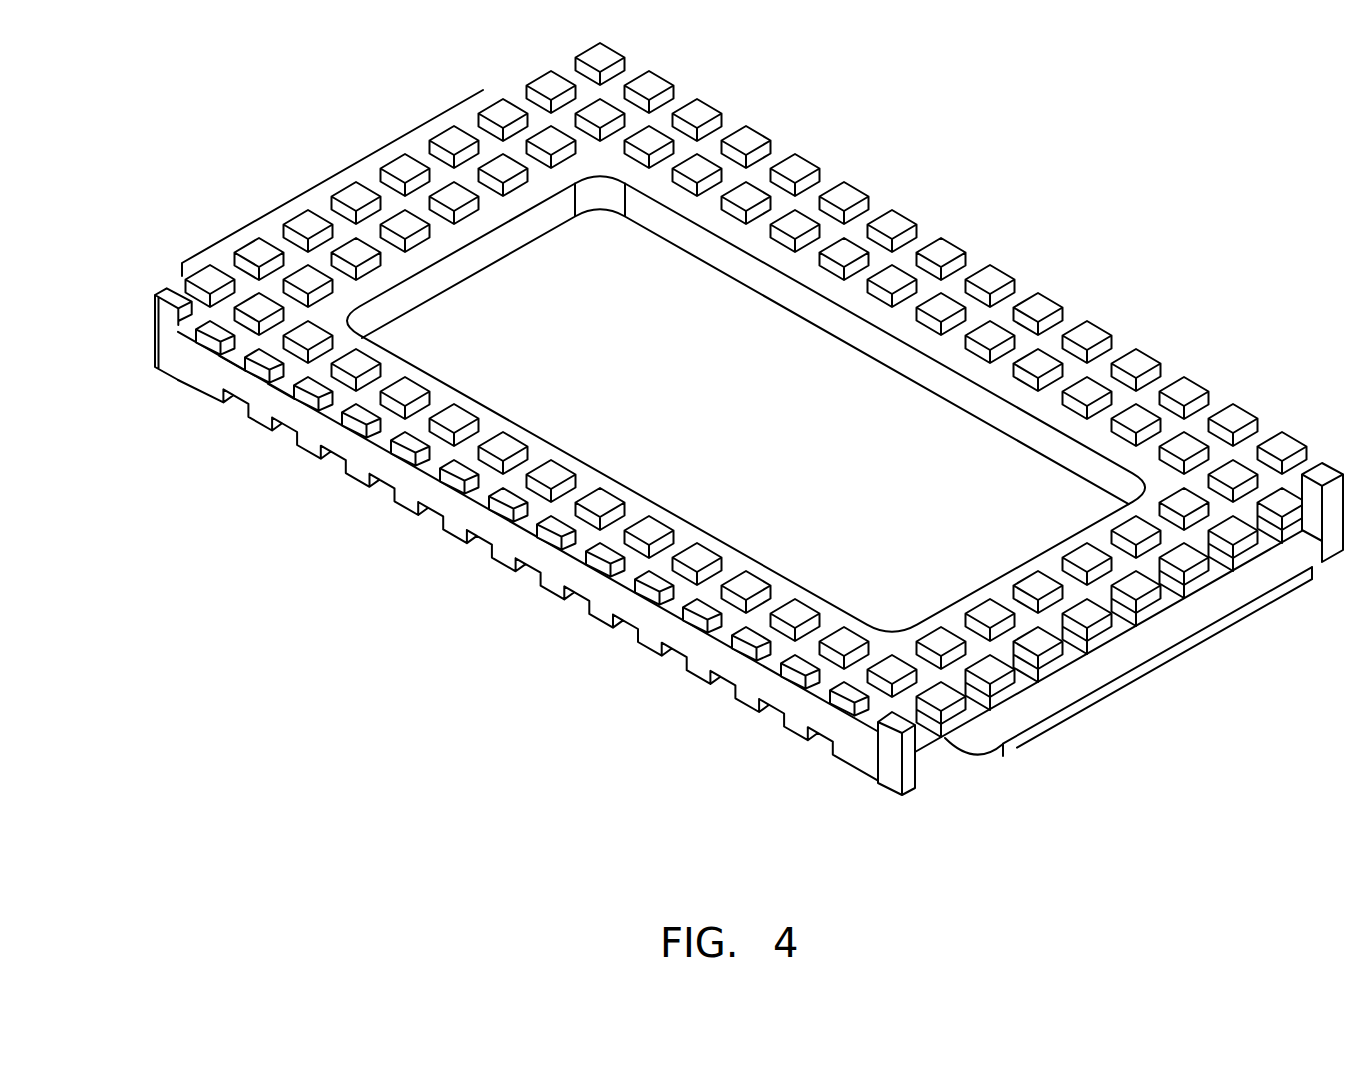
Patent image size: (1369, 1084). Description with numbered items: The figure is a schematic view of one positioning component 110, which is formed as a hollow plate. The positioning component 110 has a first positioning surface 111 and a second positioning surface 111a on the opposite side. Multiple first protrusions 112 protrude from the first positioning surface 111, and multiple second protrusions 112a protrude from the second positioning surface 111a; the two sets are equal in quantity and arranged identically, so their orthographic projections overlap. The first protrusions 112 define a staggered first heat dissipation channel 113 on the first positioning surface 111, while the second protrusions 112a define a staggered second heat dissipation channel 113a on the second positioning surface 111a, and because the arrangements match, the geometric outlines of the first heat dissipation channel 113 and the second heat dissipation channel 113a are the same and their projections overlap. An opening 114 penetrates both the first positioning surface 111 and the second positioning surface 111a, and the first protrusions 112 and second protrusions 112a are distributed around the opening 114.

The positioning component 110 is at (699, 453).
The first positioning surface 111 is at (760, 476).
The second positioning surface 111a is at (745, 621).
The first protrusions 112 is at (312, 337).
The second protrusions 112a is at (265, 431).
The first heat dissipation channel 113 is at (568, 64).
The second heat dissipation channel 113a is at (526, 586).
The opening 114 is at (987, 397).